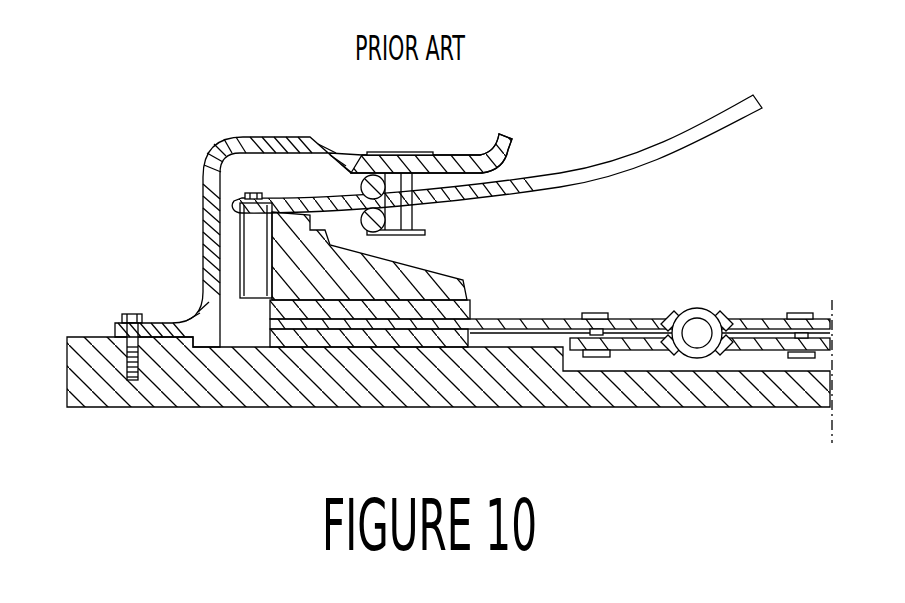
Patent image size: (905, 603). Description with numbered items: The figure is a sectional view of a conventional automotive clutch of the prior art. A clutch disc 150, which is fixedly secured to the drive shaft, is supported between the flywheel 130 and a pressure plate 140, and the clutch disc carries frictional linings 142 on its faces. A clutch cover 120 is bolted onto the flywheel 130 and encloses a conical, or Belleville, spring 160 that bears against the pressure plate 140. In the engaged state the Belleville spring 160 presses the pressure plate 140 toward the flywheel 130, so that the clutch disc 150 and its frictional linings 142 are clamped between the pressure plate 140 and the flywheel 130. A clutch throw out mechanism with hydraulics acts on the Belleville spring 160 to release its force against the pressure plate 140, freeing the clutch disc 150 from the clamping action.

The clutch cover 120 is at (207, 253).
The flywheel 130 is at (82, 348).
The pressure plate 140 is at (437, 278).
The frictional linings 142 is at (325, 312).
The clutch disc 150 is at (552, 320).
The conical (Belleville) spring 160 is at (482, 188).